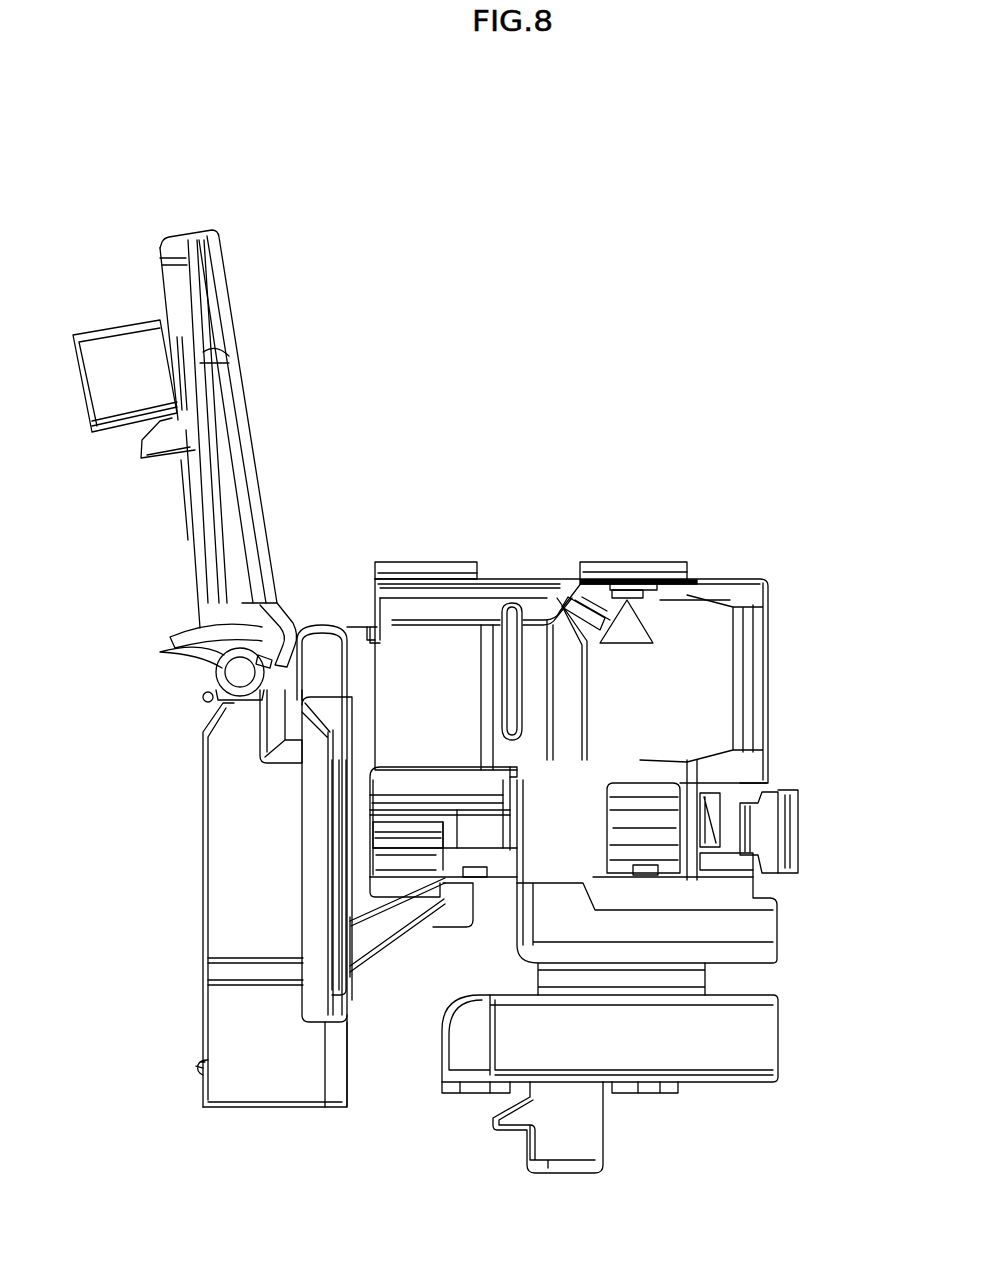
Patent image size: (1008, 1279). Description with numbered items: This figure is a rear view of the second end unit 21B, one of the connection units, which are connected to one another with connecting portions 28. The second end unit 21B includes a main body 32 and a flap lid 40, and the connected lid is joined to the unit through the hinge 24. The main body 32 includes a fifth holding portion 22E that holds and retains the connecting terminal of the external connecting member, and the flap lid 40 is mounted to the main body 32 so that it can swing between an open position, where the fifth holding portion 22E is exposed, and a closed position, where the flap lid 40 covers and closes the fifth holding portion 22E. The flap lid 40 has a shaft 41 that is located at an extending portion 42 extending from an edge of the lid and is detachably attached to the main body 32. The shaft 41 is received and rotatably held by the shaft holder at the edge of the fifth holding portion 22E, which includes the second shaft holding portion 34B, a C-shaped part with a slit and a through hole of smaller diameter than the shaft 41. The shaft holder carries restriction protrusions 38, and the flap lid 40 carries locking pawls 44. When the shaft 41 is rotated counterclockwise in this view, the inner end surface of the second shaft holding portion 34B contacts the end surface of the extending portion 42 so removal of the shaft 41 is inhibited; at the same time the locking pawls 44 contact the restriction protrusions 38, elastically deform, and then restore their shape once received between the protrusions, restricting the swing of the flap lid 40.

The second end unit 21B is at (633, 375).
The hinge 24 is at (471, 560).
The connecting portion 28 is at (800, 830).
The fifth holding portion 22E is at (203, 893).
The main body 32 is at (223, 932).
The flap lid 40 is at (252, 398).
The locking pawl 44 is at (290, 637).
The restriction protrusion 38 is at (255, 643).
The extending portion 42 is at (210, 657).
The second shaft holding portion 34B is at (233, 673).
The shaft 41 is at (206, 700).